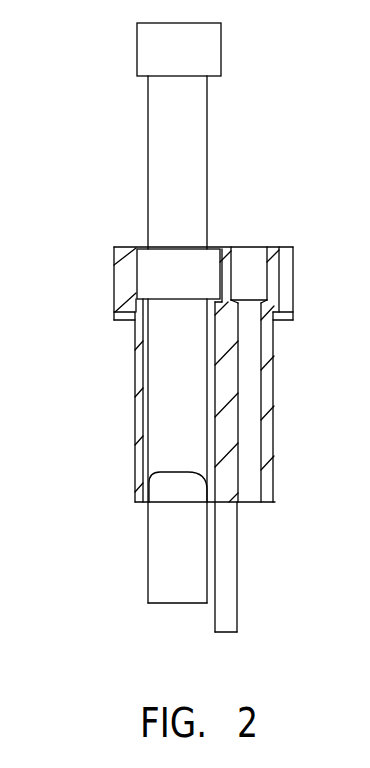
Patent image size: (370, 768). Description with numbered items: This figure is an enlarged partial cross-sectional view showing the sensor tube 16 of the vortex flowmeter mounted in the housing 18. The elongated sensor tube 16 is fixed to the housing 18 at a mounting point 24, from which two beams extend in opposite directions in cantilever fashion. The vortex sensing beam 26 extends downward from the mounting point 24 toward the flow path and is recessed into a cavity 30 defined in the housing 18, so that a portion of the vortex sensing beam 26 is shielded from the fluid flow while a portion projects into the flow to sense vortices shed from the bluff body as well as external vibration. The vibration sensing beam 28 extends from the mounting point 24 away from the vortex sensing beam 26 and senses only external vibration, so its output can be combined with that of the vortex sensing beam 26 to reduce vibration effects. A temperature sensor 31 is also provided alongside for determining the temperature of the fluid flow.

The sensor tube 16 is at (90, 208).
The housing 18 is at (274, 387).
The mounting point 24 is at (136, 279).
The vortex sensing beam 26 is at (173, 438).
The vibration sensing beam 28 is at (182, 153).
The cavity 30 is at (145, 415).
The temperature sensor 31 is at (237, 562).